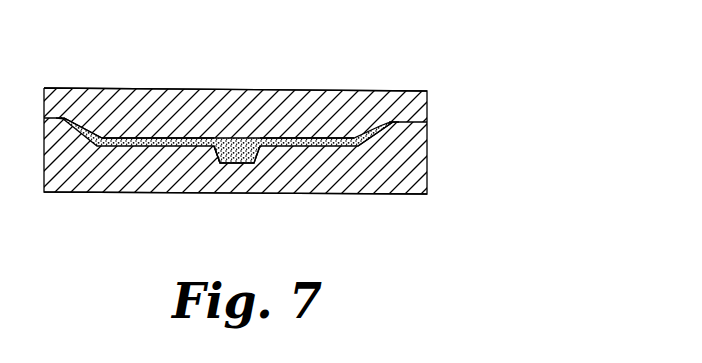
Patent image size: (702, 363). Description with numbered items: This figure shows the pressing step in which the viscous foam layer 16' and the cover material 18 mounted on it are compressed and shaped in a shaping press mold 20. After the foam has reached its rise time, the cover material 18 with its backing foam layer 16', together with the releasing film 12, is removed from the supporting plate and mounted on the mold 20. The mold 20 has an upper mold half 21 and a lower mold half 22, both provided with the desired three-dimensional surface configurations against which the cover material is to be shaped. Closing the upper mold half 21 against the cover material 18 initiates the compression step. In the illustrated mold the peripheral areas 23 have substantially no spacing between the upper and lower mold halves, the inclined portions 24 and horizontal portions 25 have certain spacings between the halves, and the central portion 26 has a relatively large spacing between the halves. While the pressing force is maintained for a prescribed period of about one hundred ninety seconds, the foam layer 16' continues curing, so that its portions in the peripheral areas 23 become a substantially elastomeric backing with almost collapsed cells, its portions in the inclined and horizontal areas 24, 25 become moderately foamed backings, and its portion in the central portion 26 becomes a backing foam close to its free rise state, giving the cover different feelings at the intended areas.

The releasing film 12 is at (227, 165).
The viscous foam layer 16' is at (284, 151).
The cover material 18 is at (428, 118).
The shaping press mold 20 is at (431, 92).
The upper mold half 21 is at (272, 90).
The lower mold half 22 is at (267, 191).
The peripheral areas 23 is at (62, 117).
The inclined portions 24 is at (103, 124).
The horizontal portions 25 is at (155, 136).
The central portion 26 is at (218, 143).